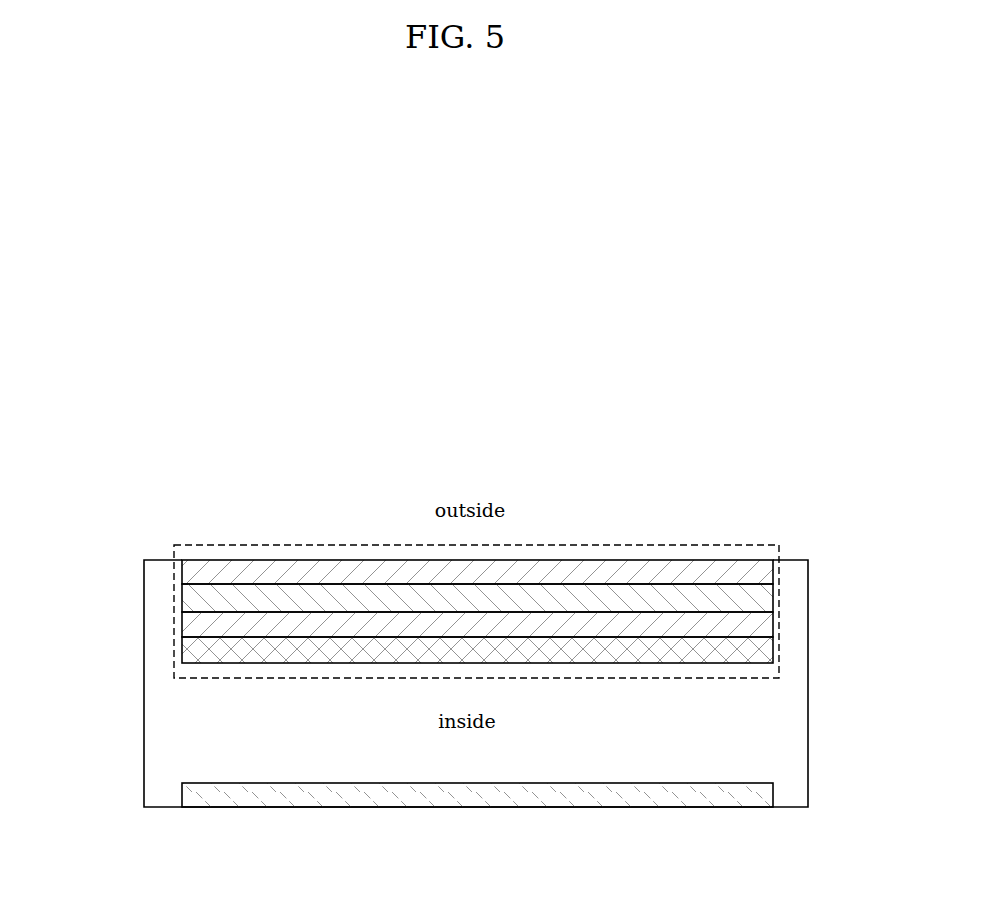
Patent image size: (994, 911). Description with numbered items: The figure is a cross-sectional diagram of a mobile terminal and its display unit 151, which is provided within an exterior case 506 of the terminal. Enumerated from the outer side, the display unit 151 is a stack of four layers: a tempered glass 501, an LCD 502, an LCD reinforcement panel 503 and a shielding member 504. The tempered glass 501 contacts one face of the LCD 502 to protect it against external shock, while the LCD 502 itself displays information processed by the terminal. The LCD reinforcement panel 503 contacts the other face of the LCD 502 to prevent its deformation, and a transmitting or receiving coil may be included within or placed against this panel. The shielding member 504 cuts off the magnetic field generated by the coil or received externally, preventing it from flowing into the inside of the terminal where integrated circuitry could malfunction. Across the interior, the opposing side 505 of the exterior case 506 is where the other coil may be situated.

The display unit 151 is at (750, 545).
The tempered glass 501 is at (183, 573).
The LCD 502 is at (183, 598).
The LCD reinforcement panel 503 is at (183, 626).
The shielding member 504 is at (183, 649).
The opposing side 505 is at (182, 795).
The exterior case 506 is at (808, 638).